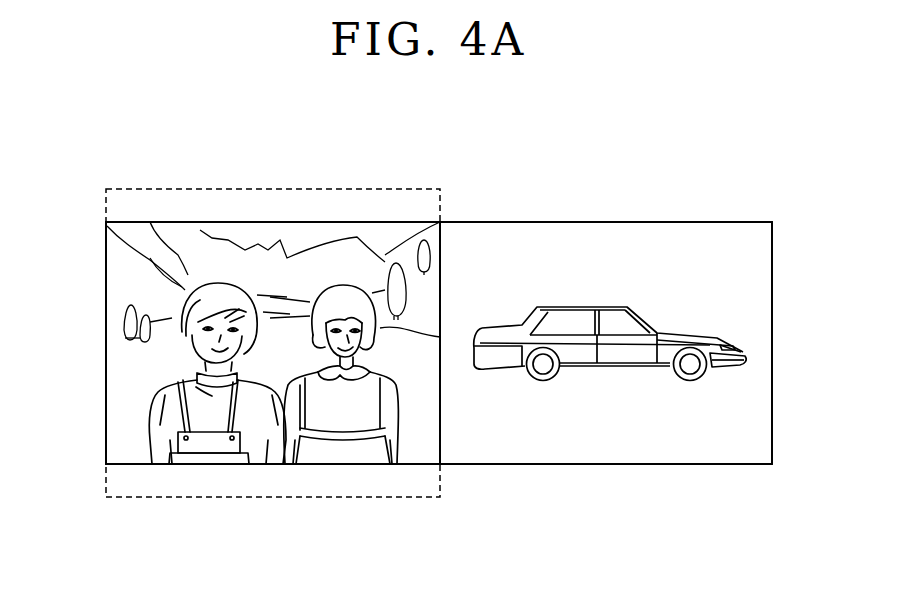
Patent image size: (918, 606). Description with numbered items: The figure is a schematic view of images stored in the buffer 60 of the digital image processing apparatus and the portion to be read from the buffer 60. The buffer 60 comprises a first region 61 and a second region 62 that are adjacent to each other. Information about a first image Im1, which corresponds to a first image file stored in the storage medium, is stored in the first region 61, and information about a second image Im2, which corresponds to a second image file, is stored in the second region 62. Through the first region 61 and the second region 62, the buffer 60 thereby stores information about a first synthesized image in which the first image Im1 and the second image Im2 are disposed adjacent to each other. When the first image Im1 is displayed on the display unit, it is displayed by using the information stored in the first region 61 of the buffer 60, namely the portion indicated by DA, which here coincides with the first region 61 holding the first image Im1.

The buffer 60 is at (727, 205).
The first region 61 is at (106, 398).
The second region 62 is at (773, 398).
The first image Im1 is at (191, 248).
The second image Im2 is at (652, 248).
The portion to be read DA is at (215, 497).